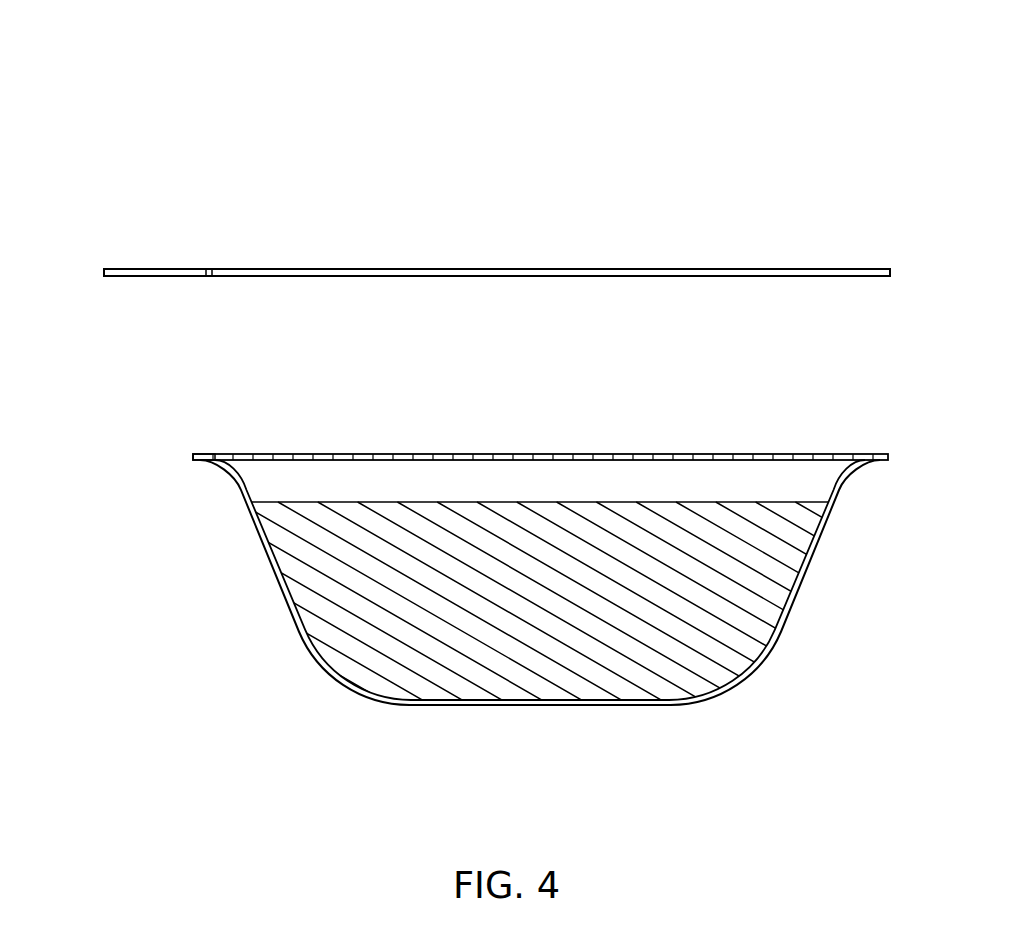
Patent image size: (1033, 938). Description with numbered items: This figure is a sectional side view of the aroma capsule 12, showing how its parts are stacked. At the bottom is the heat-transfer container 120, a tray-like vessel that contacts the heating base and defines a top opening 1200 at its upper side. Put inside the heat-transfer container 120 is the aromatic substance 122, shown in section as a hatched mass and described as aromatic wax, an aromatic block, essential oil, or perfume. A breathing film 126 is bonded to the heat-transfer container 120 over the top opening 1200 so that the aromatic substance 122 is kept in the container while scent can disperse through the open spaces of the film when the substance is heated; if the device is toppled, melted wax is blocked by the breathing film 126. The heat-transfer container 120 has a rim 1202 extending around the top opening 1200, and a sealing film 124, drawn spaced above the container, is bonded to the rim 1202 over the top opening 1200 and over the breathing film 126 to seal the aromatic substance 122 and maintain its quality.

The aroma capsule 12 is at (432, 112).
The sealing film 124 is at (559, 268).
The top opening 1200 is at (360, 437).
The breathing film 126 is at (638, 453).
The rim 1202 is at (203, 461).
The heat-transfer container 120 is at (702, 704).
The aromatic substance 122 is at (362, 632).